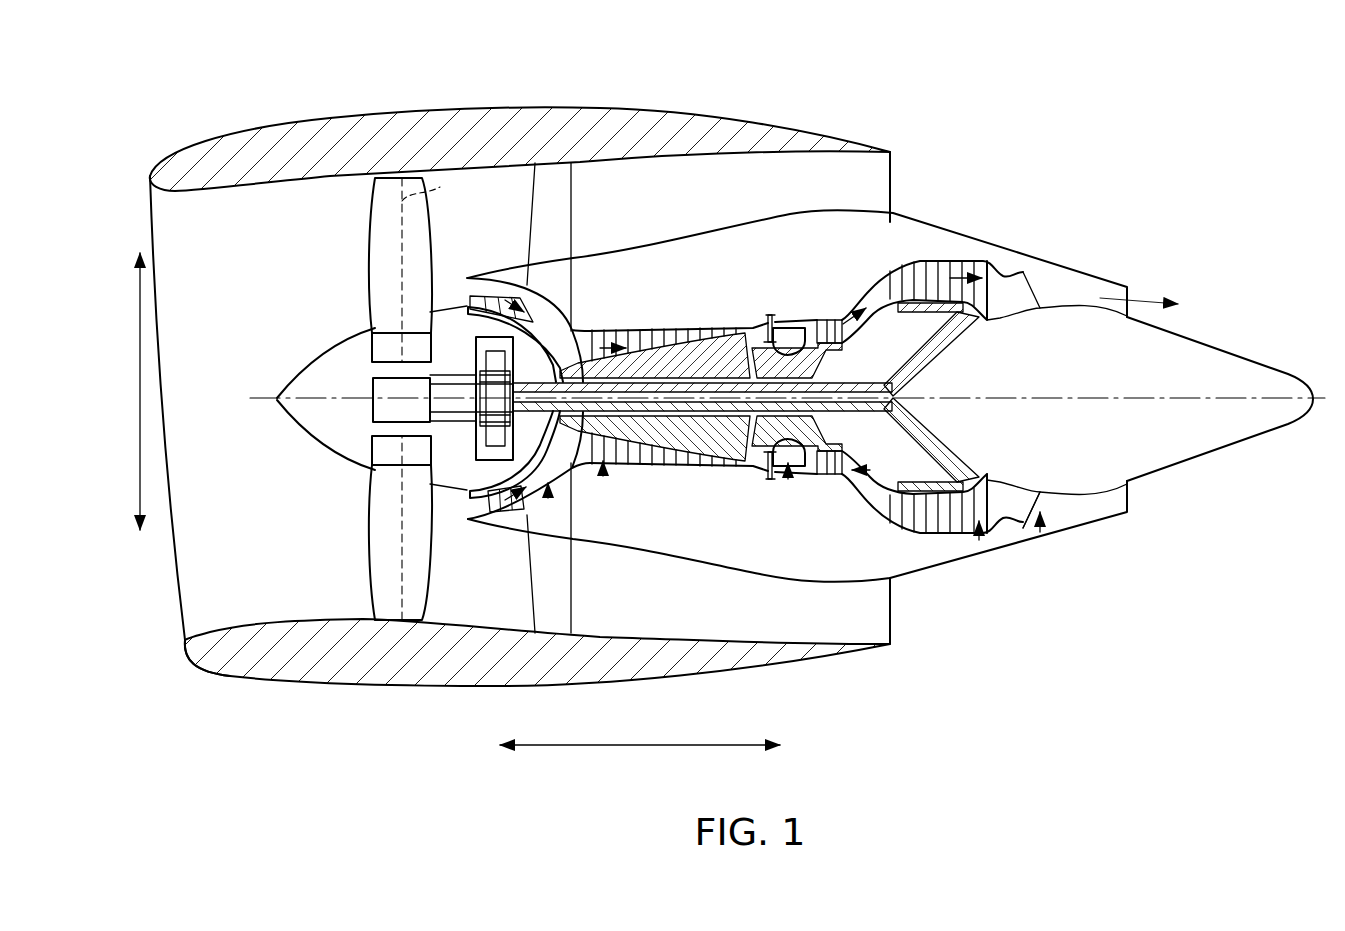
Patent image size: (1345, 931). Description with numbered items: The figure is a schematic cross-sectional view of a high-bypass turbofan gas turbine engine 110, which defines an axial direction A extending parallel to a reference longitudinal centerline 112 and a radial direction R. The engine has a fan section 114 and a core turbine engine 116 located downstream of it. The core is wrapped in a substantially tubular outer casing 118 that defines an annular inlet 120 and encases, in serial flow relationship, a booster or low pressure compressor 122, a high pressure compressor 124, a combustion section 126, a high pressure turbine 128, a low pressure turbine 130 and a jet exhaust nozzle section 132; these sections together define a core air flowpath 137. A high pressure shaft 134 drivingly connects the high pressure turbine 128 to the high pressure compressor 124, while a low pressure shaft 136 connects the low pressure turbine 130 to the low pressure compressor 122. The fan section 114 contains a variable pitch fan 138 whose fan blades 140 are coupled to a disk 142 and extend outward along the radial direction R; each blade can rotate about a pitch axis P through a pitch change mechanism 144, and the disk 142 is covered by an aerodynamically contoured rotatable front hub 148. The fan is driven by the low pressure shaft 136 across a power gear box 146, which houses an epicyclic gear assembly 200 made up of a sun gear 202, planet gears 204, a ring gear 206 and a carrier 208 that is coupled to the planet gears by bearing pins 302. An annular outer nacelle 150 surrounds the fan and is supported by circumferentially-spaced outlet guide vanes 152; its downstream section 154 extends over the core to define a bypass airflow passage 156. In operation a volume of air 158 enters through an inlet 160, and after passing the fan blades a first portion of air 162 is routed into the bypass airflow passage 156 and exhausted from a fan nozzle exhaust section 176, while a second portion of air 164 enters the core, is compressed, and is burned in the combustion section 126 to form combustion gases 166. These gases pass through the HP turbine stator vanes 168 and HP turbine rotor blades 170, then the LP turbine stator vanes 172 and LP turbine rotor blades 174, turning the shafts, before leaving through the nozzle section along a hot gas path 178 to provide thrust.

The gas turbine engine 110 is at (875, 58).
The longitudinal centerline 112 is at (1058, 396).
The fan section 114 is at (287, 214).
The core turbine engine 116 is at (748, 272).
The outer casing 118 is at (742, 570).
The annular inlet 120 is at (486, 505).
The low pressure compressor 122 is at (515, 498).
The high pressure compressor 124 is at (603, 476).
The combustion section 126 is at (784, 482).
The high pressure turbine 128 is at (868, 472).
The low pressure turbine 130 is at (979, 545).
The jet exhaust nozzle section 132 is at (1040, 536).
The high pressure shaft 134 is at (818, 370).
The low pressure shaft 136 is at (902, 386).
The core air flowpath 137 is at (542, 485).
The variable pitch fan 138 is at (330, 449).
The fan blades 140 is at (373, 565).
The disk 142 is at (373, 345).
The pitch change mechanism 144 is at (372, 393).
The power gear box 146 is at (468, 358).
The front hub 148 is at (284, 410).
The outer nacelle 150 is at (424, 688).
The outlet guide vanes 152 is at (577, 208).
The downstream section 154 is at (782, 146).
The bypass airflow passage 156 is at (691, 191).
The volume of air 158 is at (310, 260).
The inlet 160 is at (185, 638).
The first portion of air 162 is at (465, 209).
The second portion of air 164 is at (460, 292).
The combustion gases 166 is at (925, 290).
The HP turbine stator vanes 168 is at (806, 478).
The HP turbine rotor blades 170 is at (828, 458).
The LP turbine stator vanes 172 is at (892, 520).
The LP turbine rotor blades 174 is at (906, 530).
The fan nozzle exhaust section 176 is at (893, 178).
The hot gas path 178 is at (878, 286).
The epicyclic gear assembly 200 is at (496, 346).
The sun gear 202 is at (550, 468).
The planet gears 204 is at (502, 354).
The ring gear 206 is at (500, 445).
The carrier 208 is at (478, 368).
The bearing pins 302 is at (563, 342).
The pitch axis P is at (428, 190).
The radial direction R is at (113, 391).
The axial direction A is at (655, 742).